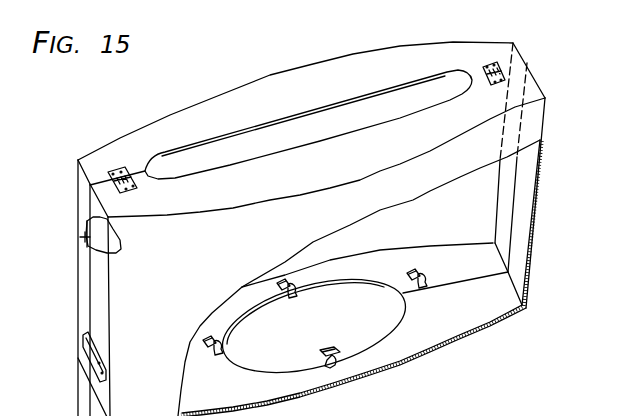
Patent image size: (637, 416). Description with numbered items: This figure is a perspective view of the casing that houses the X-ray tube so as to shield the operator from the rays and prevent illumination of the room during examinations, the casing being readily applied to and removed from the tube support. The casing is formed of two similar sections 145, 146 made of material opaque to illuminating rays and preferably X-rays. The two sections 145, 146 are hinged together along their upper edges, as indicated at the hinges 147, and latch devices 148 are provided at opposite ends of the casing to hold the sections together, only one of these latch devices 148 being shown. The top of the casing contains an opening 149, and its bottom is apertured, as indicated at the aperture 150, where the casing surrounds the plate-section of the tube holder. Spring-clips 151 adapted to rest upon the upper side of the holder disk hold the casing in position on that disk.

The casing section 145 is at (521, 53).
The casing section 146 is at (543, 90).
The hinge 147 is at (117, 170).
The latch device 148 is at (85, 348).
The opening 149 is at (313, 118).
The aperture 150 is at (378, 332).
The spring-clip 151 is at (190, 323).